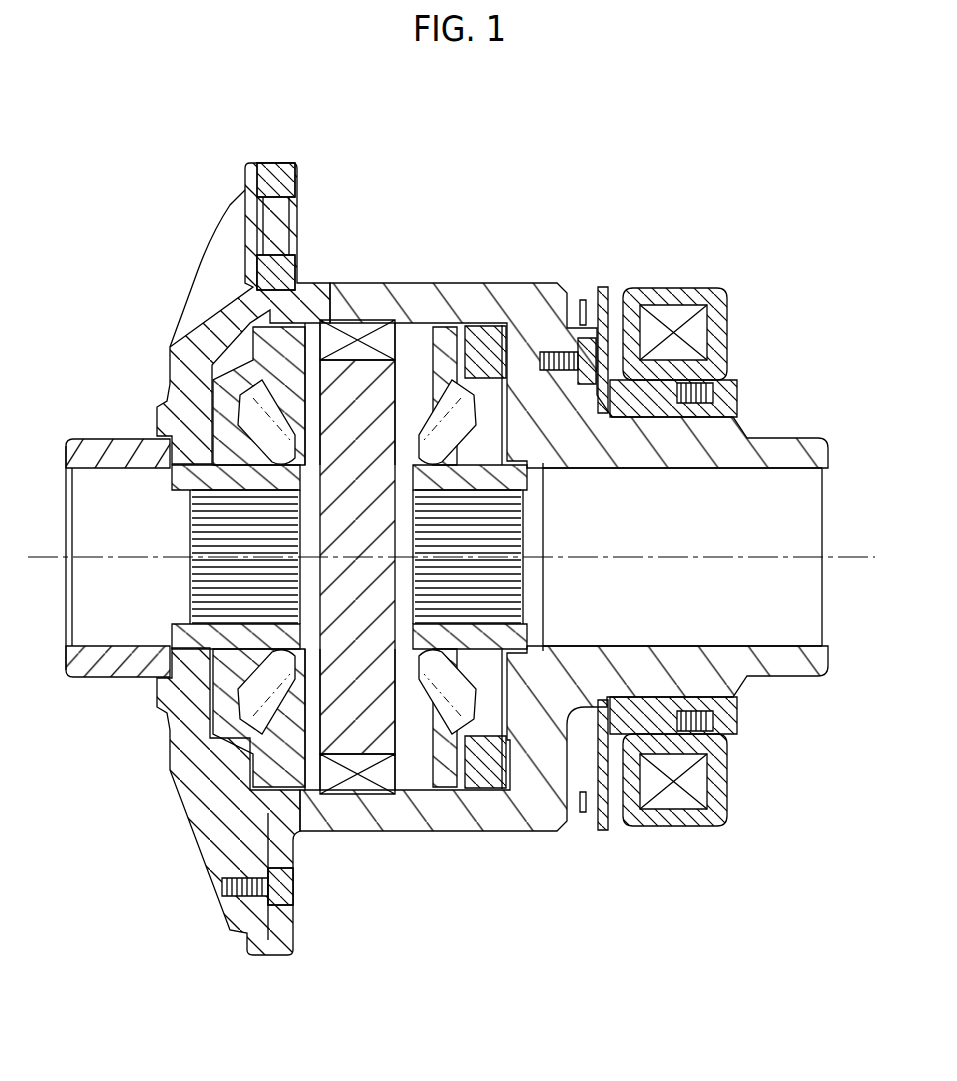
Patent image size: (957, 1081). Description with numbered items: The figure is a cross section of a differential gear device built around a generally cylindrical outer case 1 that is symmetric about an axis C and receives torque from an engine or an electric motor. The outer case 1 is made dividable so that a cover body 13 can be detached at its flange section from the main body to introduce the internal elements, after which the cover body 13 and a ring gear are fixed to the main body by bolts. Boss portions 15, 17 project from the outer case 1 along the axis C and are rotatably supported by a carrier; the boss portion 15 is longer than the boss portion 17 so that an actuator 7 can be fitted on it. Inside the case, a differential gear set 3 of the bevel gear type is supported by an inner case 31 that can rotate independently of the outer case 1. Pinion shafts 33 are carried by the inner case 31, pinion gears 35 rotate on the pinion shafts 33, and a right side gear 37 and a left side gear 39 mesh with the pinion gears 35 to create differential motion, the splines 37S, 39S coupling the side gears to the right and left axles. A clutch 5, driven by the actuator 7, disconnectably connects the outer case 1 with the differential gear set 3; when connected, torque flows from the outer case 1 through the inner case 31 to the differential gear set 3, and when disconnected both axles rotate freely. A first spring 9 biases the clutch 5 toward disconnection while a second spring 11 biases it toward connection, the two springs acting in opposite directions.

The outer case 1 is at (337, 282).
The differential gear set 3 is at (450, 559).
The clutch 5 is at (463, 852).
The actuator 7 is at (660, 858).
The first spring 9 is at (582, 832).
The second spring 11 is at (722, 727).
The cover body 13 is at (262, 162).
The boss portion 15 is at (778, 434).
The boss portion 17 is at (108, 436).
The inner case 31 is at (414, 330).
The pinion shaft 33 is at (362, 362).
The pinion gear 35 is at (432, 366).
The right side gear 37 is at (501, 557).
The spline 37S is at (490, 603).
The left side gear 39 is at (213, 557).
The spline 39S is at (192, 600).
The axis C is at (862, 548).